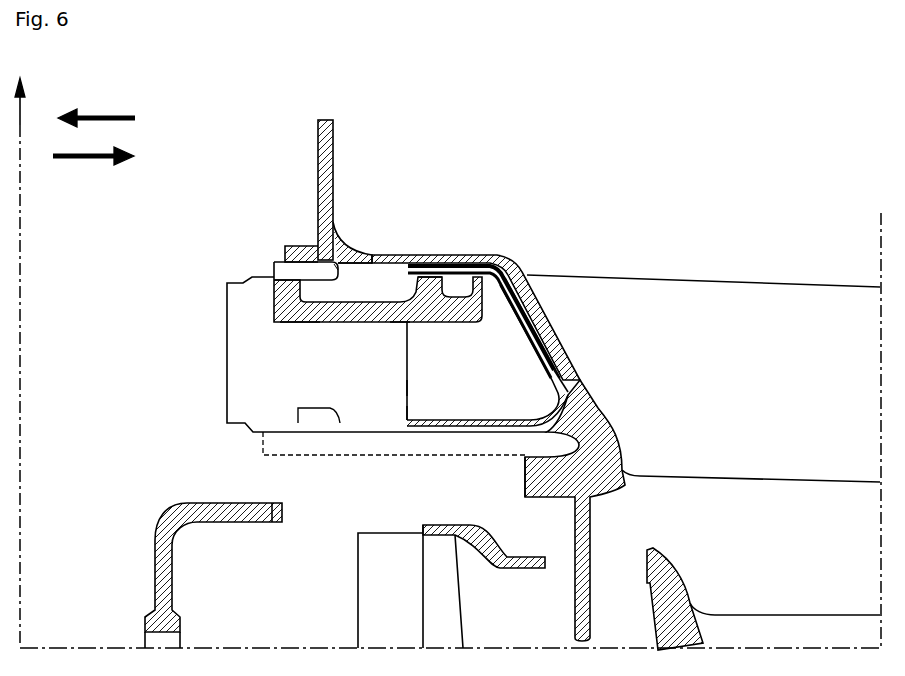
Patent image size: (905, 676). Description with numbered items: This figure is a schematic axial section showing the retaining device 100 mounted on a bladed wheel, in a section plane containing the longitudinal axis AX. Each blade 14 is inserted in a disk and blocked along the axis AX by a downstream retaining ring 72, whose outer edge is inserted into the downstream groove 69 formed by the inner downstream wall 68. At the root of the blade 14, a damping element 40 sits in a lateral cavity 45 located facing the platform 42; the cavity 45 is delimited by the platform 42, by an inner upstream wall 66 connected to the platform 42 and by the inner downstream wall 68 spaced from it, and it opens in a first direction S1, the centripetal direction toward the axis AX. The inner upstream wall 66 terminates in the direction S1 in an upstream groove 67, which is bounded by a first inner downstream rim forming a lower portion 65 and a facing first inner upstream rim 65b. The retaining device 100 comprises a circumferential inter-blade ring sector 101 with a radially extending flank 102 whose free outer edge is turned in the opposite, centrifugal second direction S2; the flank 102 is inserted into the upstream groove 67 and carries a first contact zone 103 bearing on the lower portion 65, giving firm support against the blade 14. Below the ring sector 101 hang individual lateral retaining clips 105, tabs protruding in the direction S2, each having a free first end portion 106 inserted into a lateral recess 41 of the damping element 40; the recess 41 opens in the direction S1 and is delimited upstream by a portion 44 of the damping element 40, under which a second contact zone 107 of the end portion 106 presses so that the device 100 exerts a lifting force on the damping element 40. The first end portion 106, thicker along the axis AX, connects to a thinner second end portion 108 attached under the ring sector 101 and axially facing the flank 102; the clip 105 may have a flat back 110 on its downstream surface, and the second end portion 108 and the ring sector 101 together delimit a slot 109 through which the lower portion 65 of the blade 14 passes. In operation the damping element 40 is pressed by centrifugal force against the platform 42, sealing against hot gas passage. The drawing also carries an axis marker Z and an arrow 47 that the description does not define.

The blade 14 is at (768, 374).
The damping element 40 is at (550, 358).
The lateral recess 41 is at (490, 374).
The platform 42 is at (556, 328).
The portion of the damping element 44 is at (442, 292).
The lateral cavity 45 is at (392, 414).
The gap flow path 47 is at (392, 388).
The lower portion 65 is at (316, 298).
The first inner upstream rim 65b is at (315, 243).
The inner upstream wall 66 is at (468, 256).
The upstream groove 67 is at (351, 266).
The inner downstream wall 68 is at (530, 462).
The downstream groove 69 is at (596, 443).
The retaining ring 72 is at (392, 467).
The retaining device 100 is at (342, 326).
The inter-blade ring sector 101 is at (291, 273).
The flank 102 is at (337, 272).
The first contact zone 103 is at (313, 272).
The lateral retaining clip 105 is at (496, 256).
The first end portion 106 is at (422, 297).
The second contact zone 107 is at (392, 314).
The second end portion 108 is at (312, 329).
The slot 109 is at (313, 297).
The flat back 110 is at (310, 325).
The axial direction Z is at (32, 110).
The first predetermined direction S1 is at (103, 112).
The second direction S2 is at (85, 162).
The longitudinal axis AX is at (25, 572).